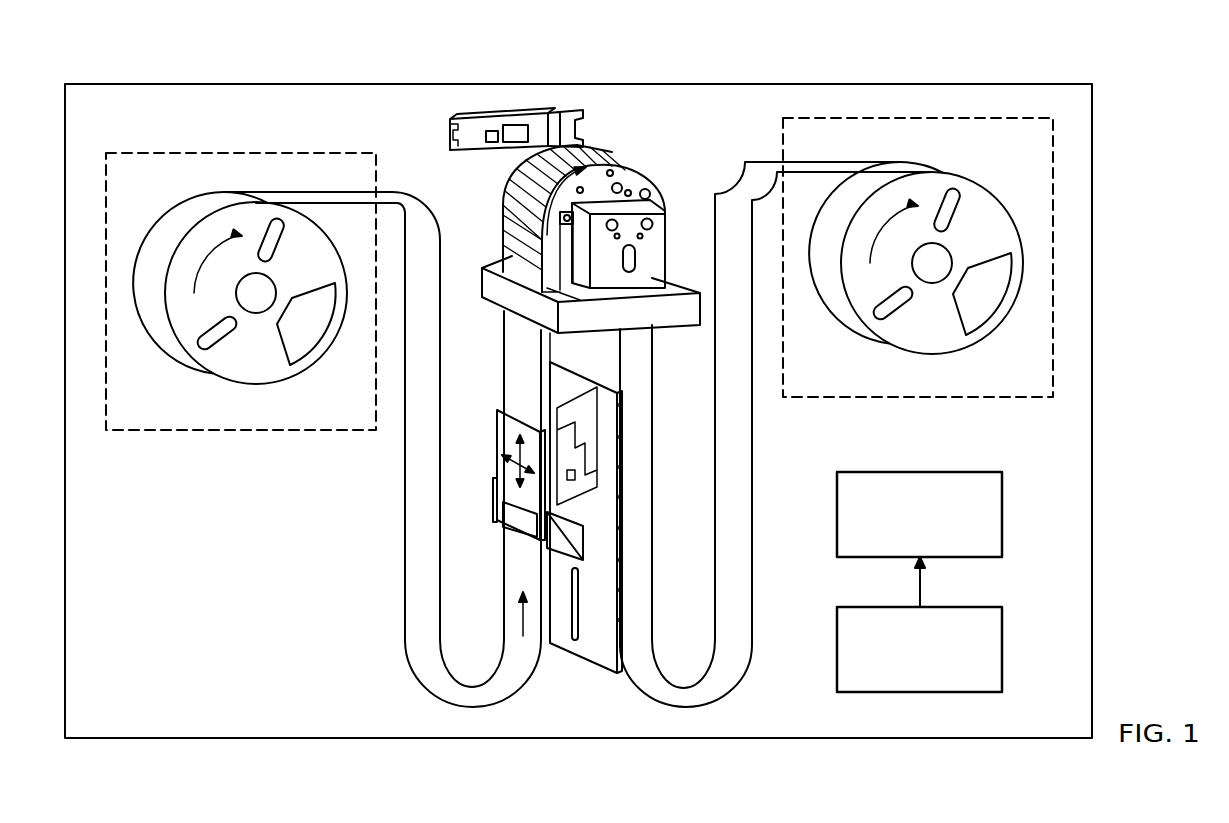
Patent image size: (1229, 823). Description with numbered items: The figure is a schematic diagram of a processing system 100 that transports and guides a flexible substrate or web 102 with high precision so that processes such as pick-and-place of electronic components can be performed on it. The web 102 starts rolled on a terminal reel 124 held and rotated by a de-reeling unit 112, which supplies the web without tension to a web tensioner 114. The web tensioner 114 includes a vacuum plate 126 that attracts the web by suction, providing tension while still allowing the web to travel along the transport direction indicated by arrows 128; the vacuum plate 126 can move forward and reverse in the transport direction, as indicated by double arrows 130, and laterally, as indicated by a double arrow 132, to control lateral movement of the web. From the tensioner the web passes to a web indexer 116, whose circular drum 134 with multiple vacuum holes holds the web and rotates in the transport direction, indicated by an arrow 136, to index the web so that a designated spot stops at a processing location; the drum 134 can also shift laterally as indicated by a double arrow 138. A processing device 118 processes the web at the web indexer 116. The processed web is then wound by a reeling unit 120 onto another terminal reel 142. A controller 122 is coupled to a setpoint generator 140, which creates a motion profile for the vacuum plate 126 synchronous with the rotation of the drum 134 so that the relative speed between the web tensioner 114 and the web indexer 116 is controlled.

The processing system 100 is at (1116, 82).
The flexible substrate (web) 102 is at (411, 626).
The de-reeling unit 112 is at (172, 430).
The web tensioner 114 is at (485, 538).
The web indexer 116 is at (569, 234).
The processing device 118 is at (519, 90).
The reeling unit 120 is at (1012, 397).
The controller 122 is at (1002, 498).
The terminal reel 124 is at (288, 372).
The vacuum plate 126 is at (520, 470).
The arrows (transport direction) 128 is at (523, 626).
The double arrows (forward and reverse movement) 130 is at (502, 442).
The double arrow (lateral movement of vacuum plate) 132 is at (512, 470).
The circular drum 134 is at (606, 160).
The arrow (drum rotation / transport direction) 136 is at (503, 200).
The double arrow (lateral movement of drum) 138 is at (556, 112).
The setpoint generator 140 is at (1002, 660).
The terminal reel 142 is at (952, 340).